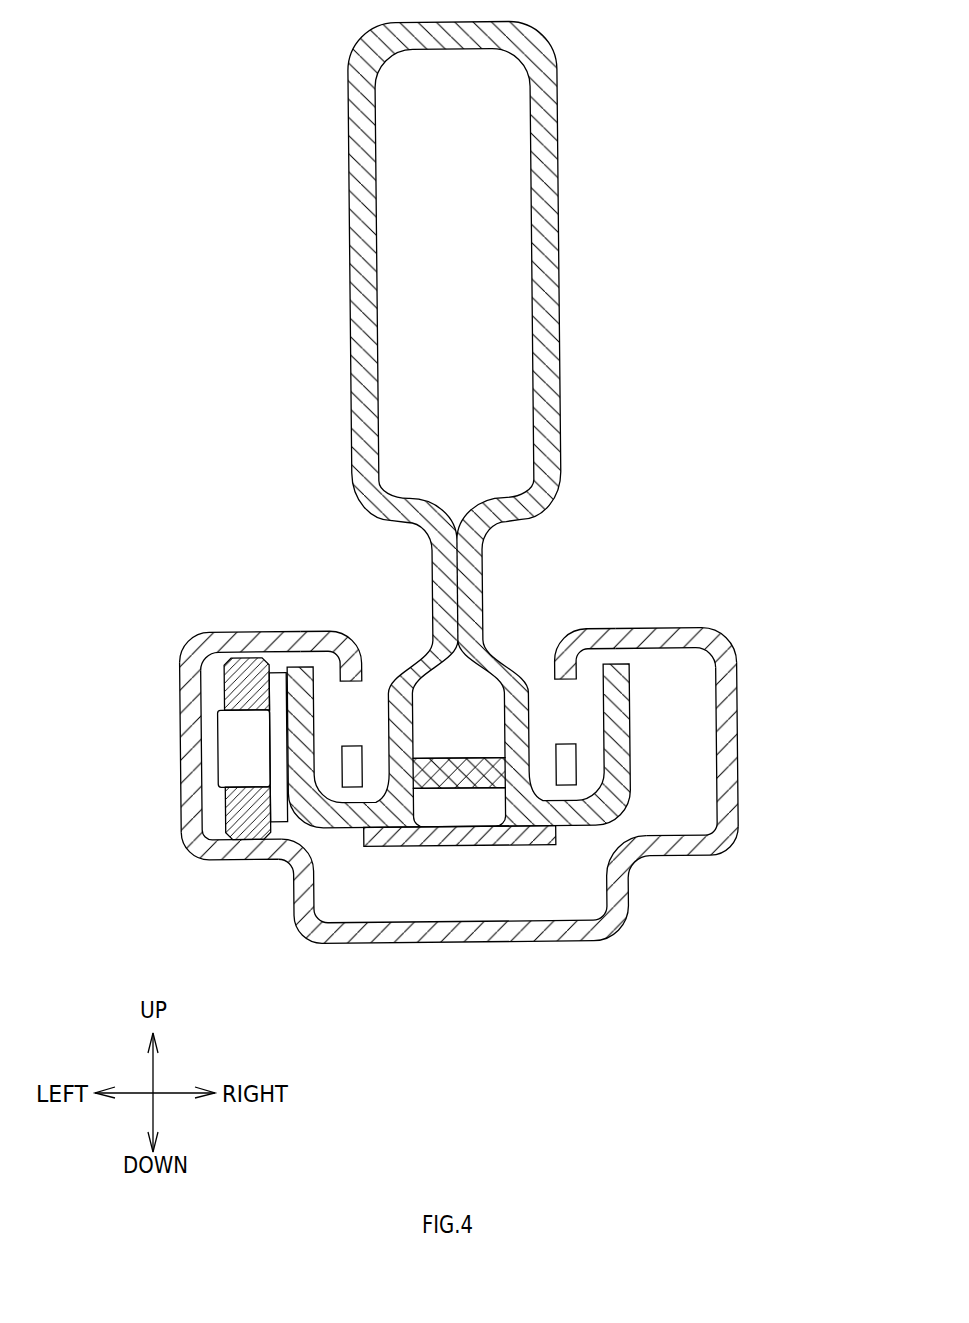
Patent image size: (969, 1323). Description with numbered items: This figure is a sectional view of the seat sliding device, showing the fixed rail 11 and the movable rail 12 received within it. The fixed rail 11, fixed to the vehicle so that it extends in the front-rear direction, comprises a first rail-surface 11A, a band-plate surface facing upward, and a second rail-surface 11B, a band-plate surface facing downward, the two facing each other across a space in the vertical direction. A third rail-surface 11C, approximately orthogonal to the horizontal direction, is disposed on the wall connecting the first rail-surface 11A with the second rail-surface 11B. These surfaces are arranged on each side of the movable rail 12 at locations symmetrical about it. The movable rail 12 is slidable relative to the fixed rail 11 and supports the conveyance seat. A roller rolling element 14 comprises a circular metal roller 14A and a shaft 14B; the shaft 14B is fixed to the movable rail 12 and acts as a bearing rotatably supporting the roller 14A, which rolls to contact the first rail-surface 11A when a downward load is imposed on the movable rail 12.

The fixed rail 11 is at (526, 946).
The first rail-surface 11A is at (210, 846).
The second rail-surface 11B is at (327, 632).
The third rail-surface 11C is at (195, 783).
The movable rail 12 is at (350, 423).
The roller rolling element 14 is at (207, 727).
The roller 14A is at (240, 670).
The shaft 14B is at (245, 773).